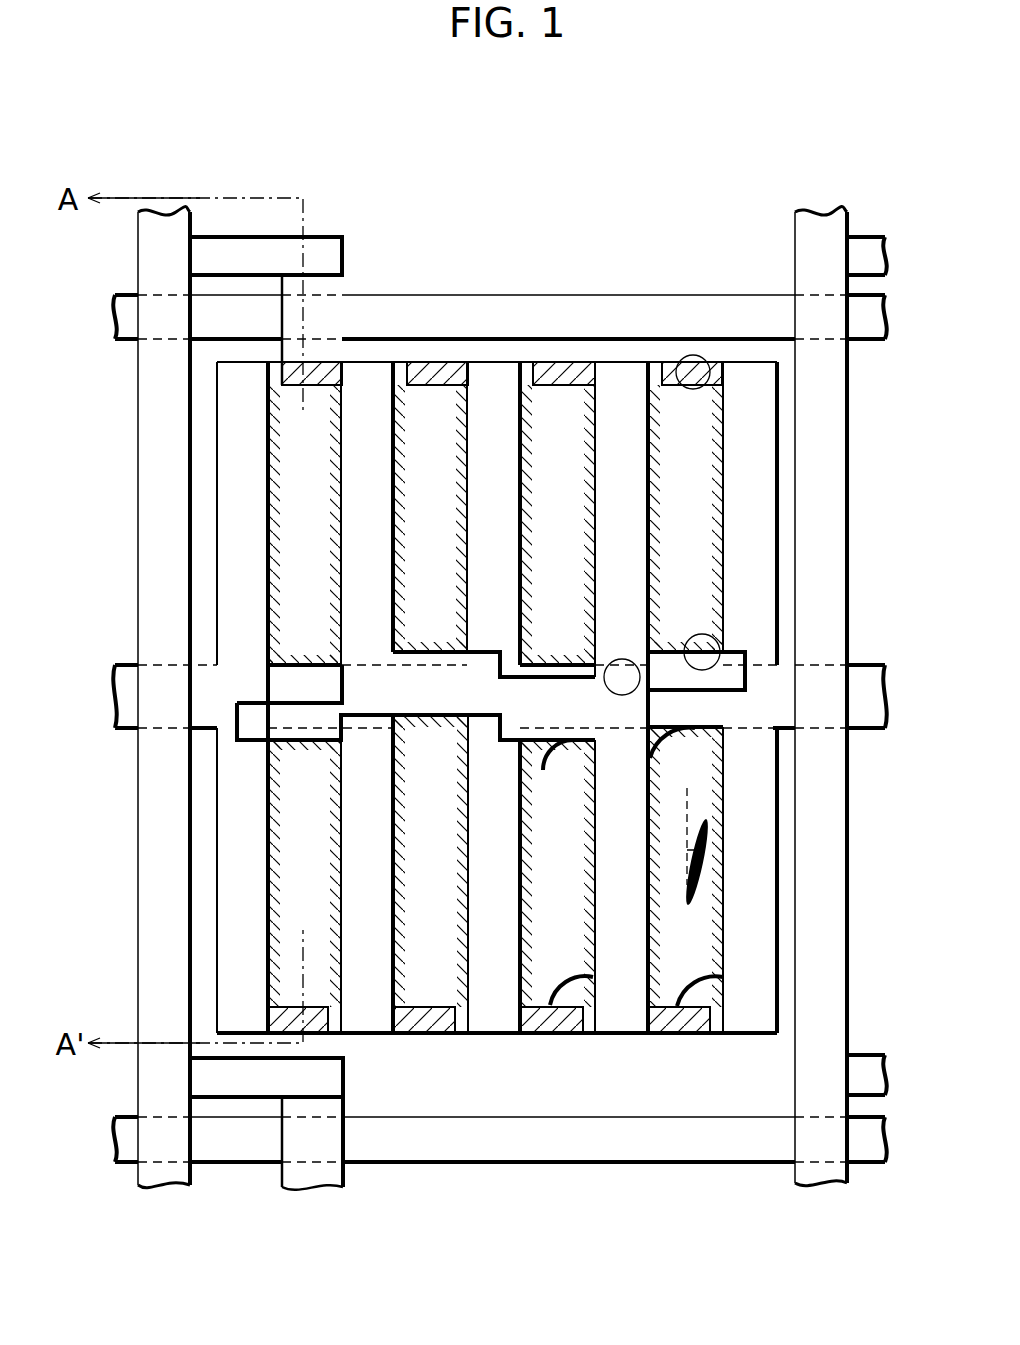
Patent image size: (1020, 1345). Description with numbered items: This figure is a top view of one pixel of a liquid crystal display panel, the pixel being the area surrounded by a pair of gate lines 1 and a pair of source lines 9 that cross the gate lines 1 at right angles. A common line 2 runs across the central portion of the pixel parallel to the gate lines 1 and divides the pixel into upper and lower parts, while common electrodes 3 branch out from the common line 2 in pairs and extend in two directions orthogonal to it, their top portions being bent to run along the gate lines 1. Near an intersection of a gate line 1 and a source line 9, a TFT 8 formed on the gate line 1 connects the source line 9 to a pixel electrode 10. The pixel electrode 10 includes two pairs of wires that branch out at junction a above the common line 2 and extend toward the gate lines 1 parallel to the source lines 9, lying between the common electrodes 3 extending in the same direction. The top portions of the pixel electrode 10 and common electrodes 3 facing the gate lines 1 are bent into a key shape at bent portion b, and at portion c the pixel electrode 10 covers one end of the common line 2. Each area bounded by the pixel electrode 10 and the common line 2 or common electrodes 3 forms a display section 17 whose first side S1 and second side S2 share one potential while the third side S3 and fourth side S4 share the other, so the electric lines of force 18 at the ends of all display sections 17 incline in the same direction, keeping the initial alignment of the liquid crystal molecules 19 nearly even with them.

The gate line 1 is at (575, 315).
The common line 2 is at (763, 697).
The common electrode 3 is at (243, 552).
The TFT 8 is at (333, 318).
The source line 9 is at (165, 245).
The pixel electrode 10 is at (362, 330).
The display section 17 is at (685, 465).
The electric line of force 18 is at (688, 757).
The liquid crystal molecule 19 is at (700, 882).
The junction a is at (634, 690).
The bent portion b is at (693, 355).
The overlapping portion c is at (716, 640).
The first side S1 is at (568, 376).
The second side S2 is at (595, 525).
The third side S3 is at (556, 666).
The fourth side S4 is at (518, 567).